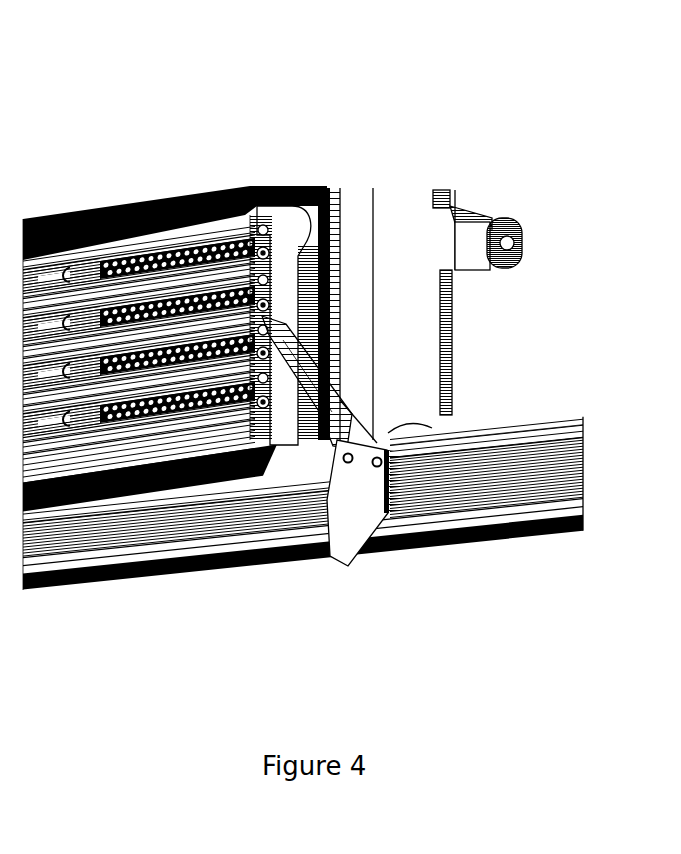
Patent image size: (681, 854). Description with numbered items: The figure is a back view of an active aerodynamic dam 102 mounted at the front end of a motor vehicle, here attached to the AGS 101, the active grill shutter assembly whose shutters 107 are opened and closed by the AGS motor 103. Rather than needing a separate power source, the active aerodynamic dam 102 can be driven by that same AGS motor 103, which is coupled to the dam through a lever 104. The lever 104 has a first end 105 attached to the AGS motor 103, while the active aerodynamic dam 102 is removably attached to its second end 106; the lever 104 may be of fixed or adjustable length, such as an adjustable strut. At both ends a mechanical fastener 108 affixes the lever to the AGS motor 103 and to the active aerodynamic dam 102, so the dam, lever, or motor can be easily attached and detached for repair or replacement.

The AGS 101 is at (213, 200).
The active aerodynamic dam 102 is at (237, 543).
The AGS motor 103 is at (297, 277).
The lever 104 is at (320, 398).
The first end 105 is at (262, 320).
The second end 106 is at (357, 432).
The shutters 107 is at (98, 392).
The mechanical fastener 108 is at (378, 462).